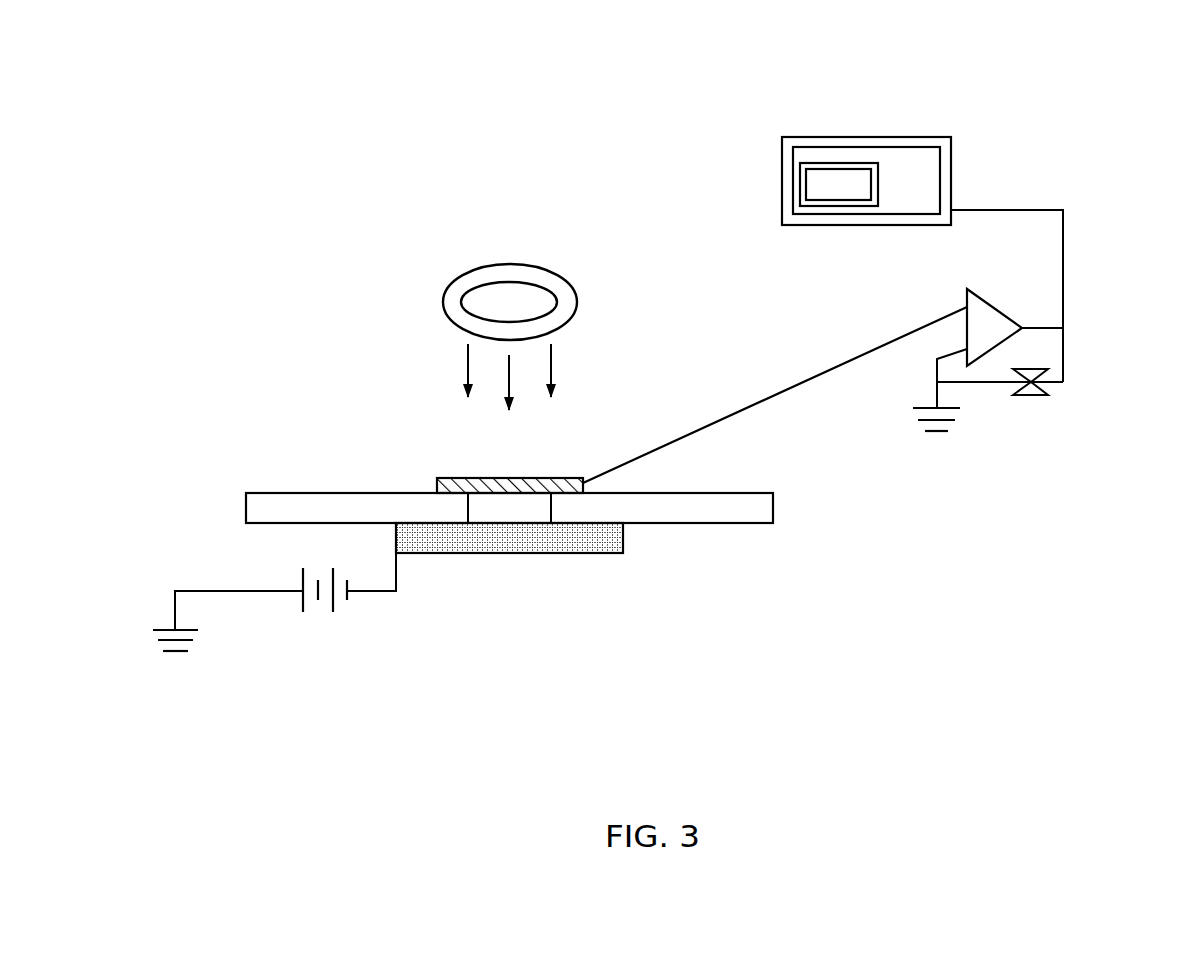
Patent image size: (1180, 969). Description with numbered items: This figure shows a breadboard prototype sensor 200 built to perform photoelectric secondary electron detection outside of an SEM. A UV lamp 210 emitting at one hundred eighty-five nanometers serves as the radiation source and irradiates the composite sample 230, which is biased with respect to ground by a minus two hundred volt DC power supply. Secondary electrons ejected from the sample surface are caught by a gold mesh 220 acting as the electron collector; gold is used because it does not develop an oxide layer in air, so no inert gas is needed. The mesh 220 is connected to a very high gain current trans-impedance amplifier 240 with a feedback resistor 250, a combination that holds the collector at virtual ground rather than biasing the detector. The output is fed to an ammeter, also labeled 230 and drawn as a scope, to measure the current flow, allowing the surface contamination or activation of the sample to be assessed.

The breadboard prototype sensor 200 is at (627, 132).
The UV lamp 210 is at (509, 263).
The gold mesh 220 is at (453, 478).
The composite sample 230 is at (867, 137).
The trans-impedance amplifier 240 is at (962, 302).
The feedback resistor 250 is at (1027, 369).